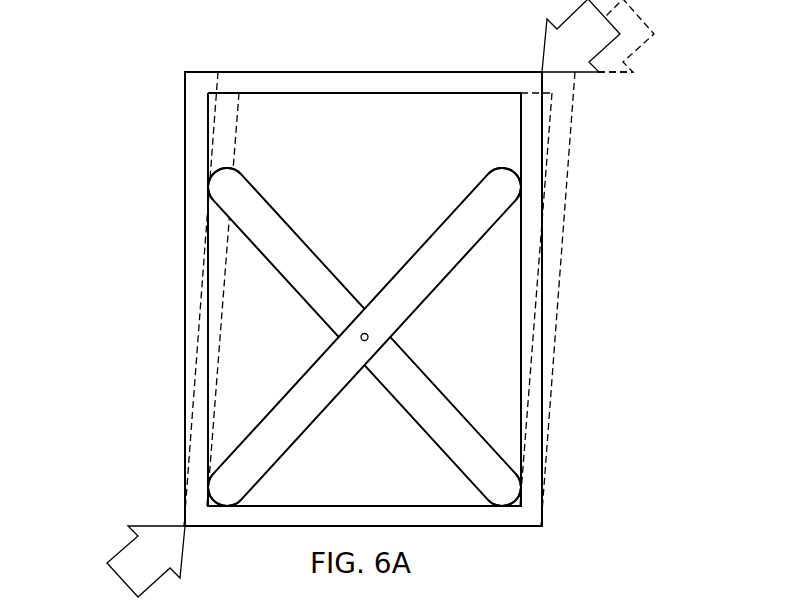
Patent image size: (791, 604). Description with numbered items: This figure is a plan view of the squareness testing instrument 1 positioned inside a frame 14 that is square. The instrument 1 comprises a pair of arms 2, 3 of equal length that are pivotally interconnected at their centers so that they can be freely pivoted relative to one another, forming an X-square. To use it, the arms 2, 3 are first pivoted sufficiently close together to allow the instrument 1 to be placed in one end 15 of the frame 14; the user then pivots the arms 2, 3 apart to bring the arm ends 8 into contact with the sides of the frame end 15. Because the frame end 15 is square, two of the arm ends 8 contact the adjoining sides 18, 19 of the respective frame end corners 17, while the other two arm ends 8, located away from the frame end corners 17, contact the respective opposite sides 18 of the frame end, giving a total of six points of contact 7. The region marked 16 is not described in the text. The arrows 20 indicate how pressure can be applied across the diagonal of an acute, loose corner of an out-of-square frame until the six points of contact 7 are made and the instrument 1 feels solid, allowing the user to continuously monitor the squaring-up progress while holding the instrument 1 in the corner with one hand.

The squareness testing instrument 1 is at (367, 367).
The arm 2 is at (428, 295).
The arm 3 is at (433, 378).
The point of contact 7 is at (208, 183).
The arm end 8 is at (233, 198).
The frame 14 is at (166, 104).
The frame end 15 is at (337, 494).
The upper crossbar of inner frame 16 is at (357, 131).
The frame end corner 17 is at (196, 508).
The side 18 is at (208, 277).
The side 19 is at (443, 505).
The arrow 20 is at (587, 72).